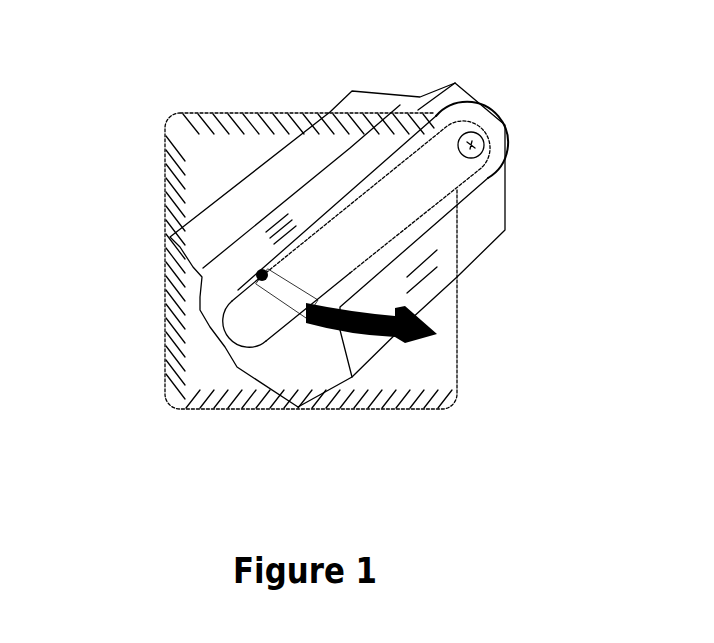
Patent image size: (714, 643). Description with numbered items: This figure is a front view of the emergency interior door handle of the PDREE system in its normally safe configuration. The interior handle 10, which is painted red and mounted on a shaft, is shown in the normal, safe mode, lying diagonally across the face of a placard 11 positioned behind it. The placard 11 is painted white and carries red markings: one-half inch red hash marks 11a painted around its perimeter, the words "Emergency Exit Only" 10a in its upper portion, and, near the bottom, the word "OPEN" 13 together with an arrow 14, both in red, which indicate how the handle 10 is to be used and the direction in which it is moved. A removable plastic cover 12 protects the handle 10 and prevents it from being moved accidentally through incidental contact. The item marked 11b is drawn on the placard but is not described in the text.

The interior handle 10 is at (465, 176).
The words "Emergency Exit Only" 10a is at (418, 132).
The placard 11 is at (453, 377).
The red hash marks 11a is at (183, 135).
The Emergency Exit Only text 11b is at (232, 148).
The removable plastic cover 12 is at (232, 300).
The word "OPEN" 13 is at (197, 377).
The arrow 14 is at (437, 333).